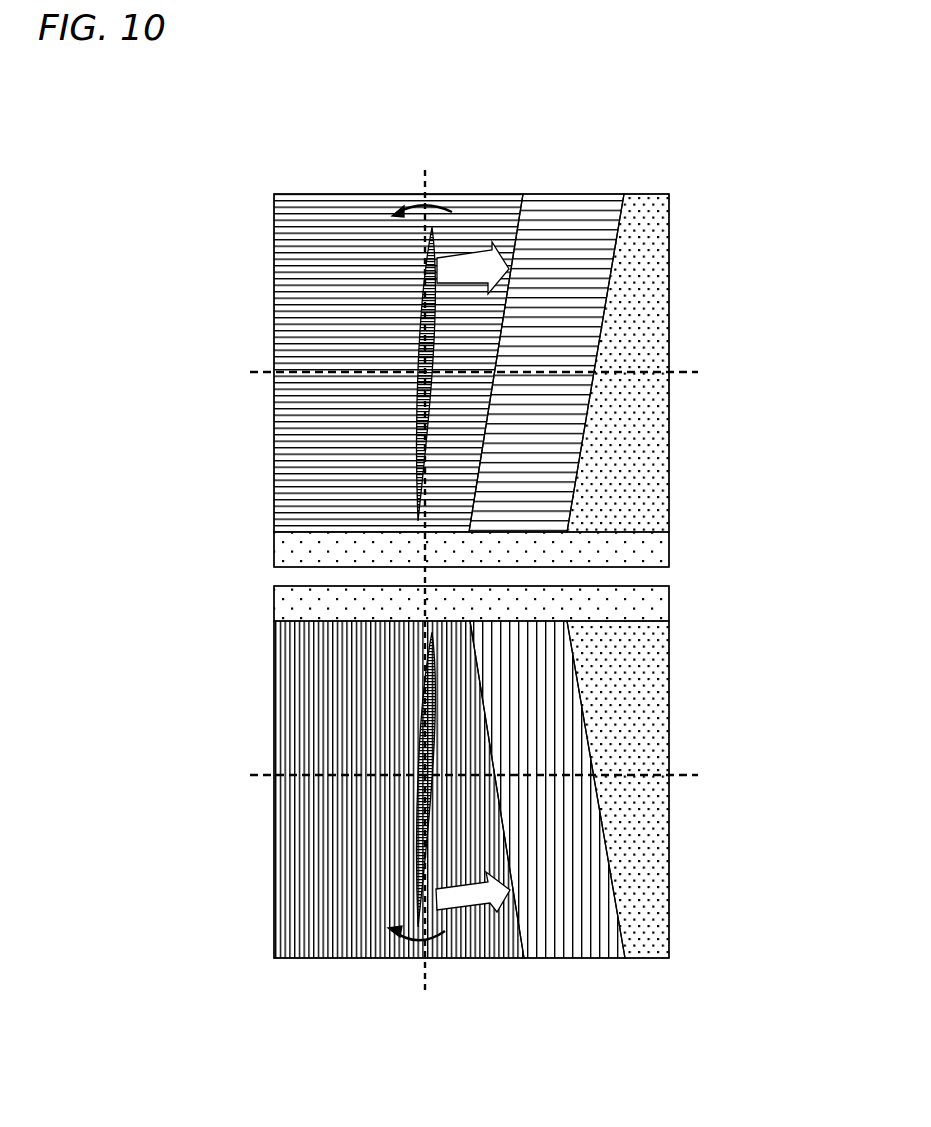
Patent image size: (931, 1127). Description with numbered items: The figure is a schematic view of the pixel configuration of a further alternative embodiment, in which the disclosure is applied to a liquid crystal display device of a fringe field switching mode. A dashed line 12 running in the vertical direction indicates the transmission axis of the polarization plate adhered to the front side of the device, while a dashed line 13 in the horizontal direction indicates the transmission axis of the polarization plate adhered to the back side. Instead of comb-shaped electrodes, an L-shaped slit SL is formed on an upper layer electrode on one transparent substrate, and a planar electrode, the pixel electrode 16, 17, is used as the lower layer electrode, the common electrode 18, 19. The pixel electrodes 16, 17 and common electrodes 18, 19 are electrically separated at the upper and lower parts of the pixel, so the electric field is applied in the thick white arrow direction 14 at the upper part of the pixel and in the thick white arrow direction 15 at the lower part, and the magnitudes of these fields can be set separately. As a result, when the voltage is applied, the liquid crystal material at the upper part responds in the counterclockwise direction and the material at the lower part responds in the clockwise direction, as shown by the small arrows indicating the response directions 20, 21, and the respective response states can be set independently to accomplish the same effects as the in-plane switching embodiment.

The dashed line in the vertical direction 12 is at (442, 339).
The dashed line in the horizontal direction 13 is at (605, 372).
The thick white arrow direction 14 is at (485, 250).
The thick white arrow direction 15 is at (449, 809).
The pixel electrode 16 is at (567, 445).
The pixel electrode 17 is at (590, 828).
The common electrode 18 is at (290, 450).
The common electrode 19 is at (295, 732).
The response direction 20 is at (411, 198).
The response direction 21 is at (410, 953).
The L-shaped slit SL is at (490, 440).